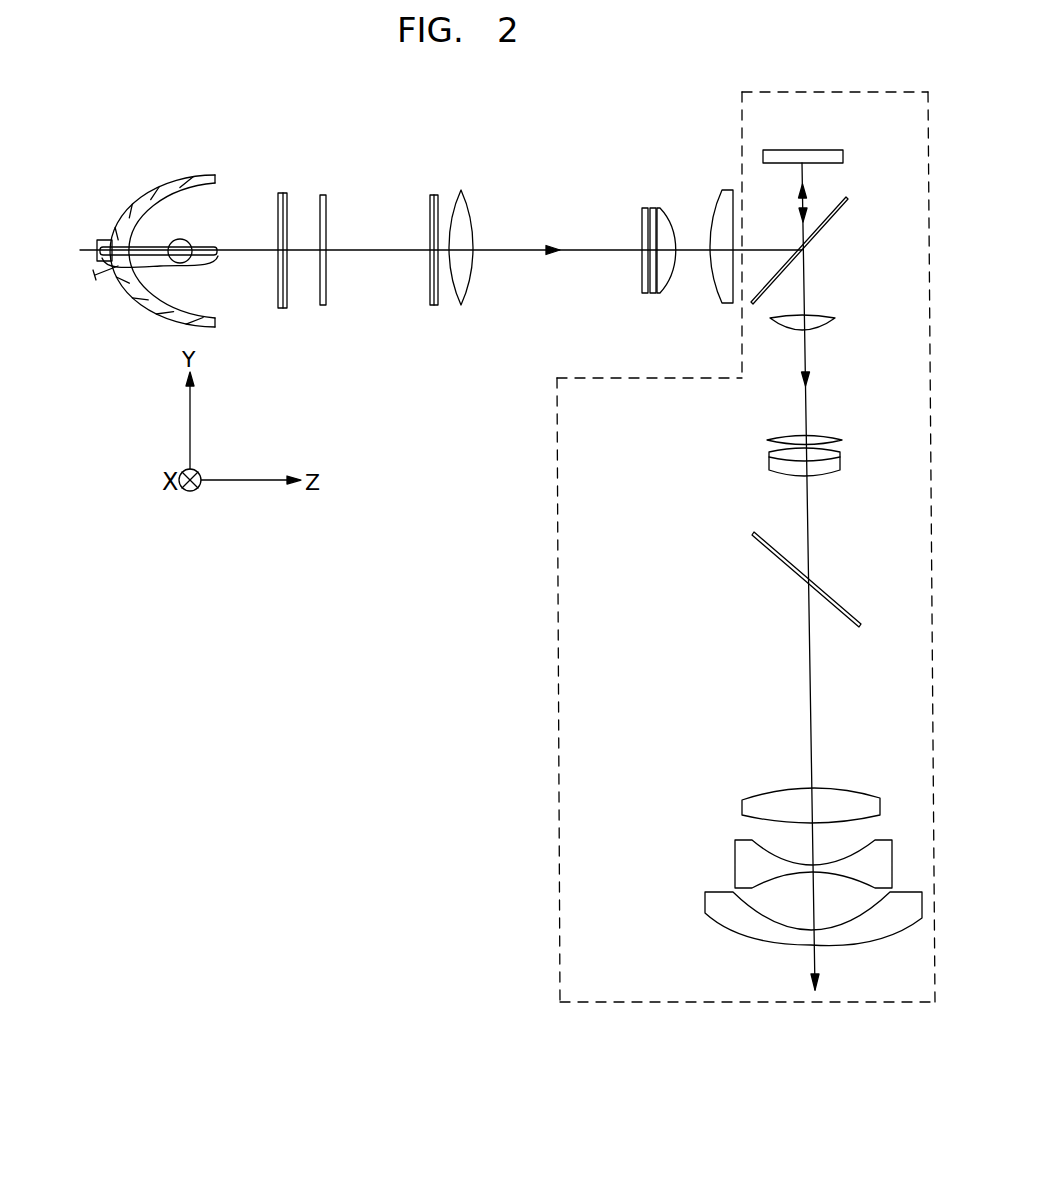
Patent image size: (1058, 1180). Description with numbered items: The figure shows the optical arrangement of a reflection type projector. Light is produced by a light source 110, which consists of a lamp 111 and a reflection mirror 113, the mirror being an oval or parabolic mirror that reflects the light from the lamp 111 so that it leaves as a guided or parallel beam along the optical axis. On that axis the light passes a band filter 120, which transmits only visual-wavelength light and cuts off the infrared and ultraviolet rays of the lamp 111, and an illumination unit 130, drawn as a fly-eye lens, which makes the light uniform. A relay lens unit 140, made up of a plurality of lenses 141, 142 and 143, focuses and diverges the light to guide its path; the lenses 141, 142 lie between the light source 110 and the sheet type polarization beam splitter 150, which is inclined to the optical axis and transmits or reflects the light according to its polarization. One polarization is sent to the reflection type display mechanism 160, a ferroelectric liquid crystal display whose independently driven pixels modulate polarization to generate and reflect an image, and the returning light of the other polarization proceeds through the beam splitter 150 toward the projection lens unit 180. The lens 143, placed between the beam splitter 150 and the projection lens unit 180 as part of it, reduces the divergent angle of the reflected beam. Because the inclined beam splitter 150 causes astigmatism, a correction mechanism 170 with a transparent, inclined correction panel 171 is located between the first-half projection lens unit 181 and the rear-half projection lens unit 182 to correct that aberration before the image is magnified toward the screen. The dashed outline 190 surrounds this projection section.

The light source 110 is at (171, 237).
The lamp 111 is at (179, 240).
The reflection mirror 113 is at (158, 315).
The band filter 120 is at (280, 190).
The illumination unit 130 is at (428, 185).
The relay lens unit 140 is at (716, 268).
The lens 141 is at (662, 293).
The lens 142 is at (718, 297).
The lens 143 is at (783, 328).
The sheet type polarization beam splitter 150 is at (847, 197).
The reflection type display mechanism 160 is at (813, 149).
The correction mechanism 170 is at (830, 599).
The correction panel 171 is at (858, 627).
The projection lens unit 180 is at (757, 691).
The first-half projection lens unit 181 is at (760, 438).
The rear-half projection lens unit 182 is at (773, 867).
The projection lens housing 190 is at (558, 783).